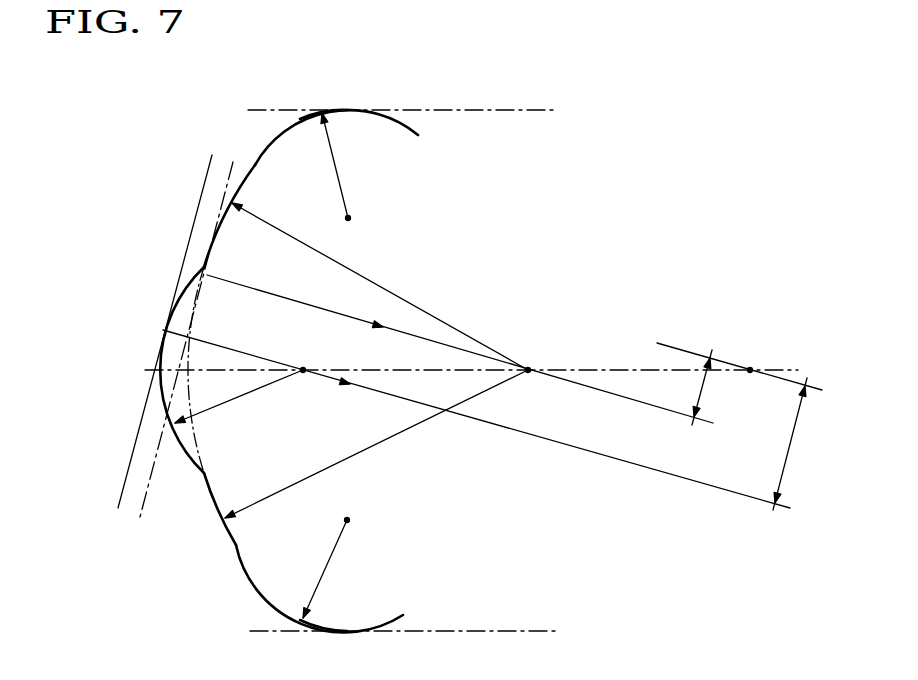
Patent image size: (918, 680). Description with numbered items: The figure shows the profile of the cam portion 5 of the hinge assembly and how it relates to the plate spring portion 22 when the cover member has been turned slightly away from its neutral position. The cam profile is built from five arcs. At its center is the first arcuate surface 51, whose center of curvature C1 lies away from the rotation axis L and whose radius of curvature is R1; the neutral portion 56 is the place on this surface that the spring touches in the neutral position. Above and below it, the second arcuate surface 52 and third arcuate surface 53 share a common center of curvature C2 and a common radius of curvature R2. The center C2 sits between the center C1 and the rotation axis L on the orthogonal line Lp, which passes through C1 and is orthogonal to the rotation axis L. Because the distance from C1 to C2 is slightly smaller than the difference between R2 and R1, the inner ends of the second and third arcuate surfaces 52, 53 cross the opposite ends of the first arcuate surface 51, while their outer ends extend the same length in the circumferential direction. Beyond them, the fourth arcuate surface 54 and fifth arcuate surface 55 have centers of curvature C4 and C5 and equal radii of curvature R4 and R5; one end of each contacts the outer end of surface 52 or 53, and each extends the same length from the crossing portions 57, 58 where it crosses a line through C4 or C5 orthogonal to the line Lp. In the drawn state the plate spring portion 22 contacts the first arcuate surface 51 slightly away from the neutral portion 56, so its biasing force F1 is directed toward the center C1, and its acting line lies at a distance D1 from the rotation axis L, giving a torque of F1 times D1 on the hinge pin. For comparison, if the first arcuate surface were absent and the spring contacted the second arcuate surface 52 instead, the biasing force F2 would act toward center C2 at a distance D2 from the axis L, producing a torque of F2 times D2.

The cam portion 5 is at (259, 370).
The plate spring portion 22 is at (528, 108).
The first arcuate surface 51 is at (152, 350).
The second arcuate surface 52 is at (233, 190).
The third arcuate surface 53 is at (232, 543).
The fourth arcuate surface 54 is at (313, 110).
The fifth arcuate surface 55 is at (307, 627).
The neutral portion 56 is at (158, 368).
The crossing portion 57 is at (336, 112).
The crossing portion 58 is at (319, 612).
The center of curvature of first arcuate surface C1 is at (303, 373).
The center of curvature of second and third arcuate surfaces C2 is at (528, 370).
The center of curvature of fourth arcuate surface C4 is at (369, 218).
The center of curvature of fifth arcuate surface C5 is at (368, 518).
The radius of curvature of first arcuate surface R1 is at (239, 396).
The radius of curvature of second and third arcuate surfaces R2 is at (376, 360).
The radius of curvature of fourth arcuate surface R4 is at (346, 165).
The radius of curvature of fifth arcuate surface R5 is at (319, 569).
The biasing force F1 is at (476, 414).
The biasing force F2 is at (460, 345).
The orthogonal line Lp is at (627, 370).
The rotation axis L is at (750, 370).
The distance between acting line of biasing force F1 and rotation axis D1 is at (802, 444).
The distance between acting line of biasing force F2 and rotation axis D2 is at (719, 387).